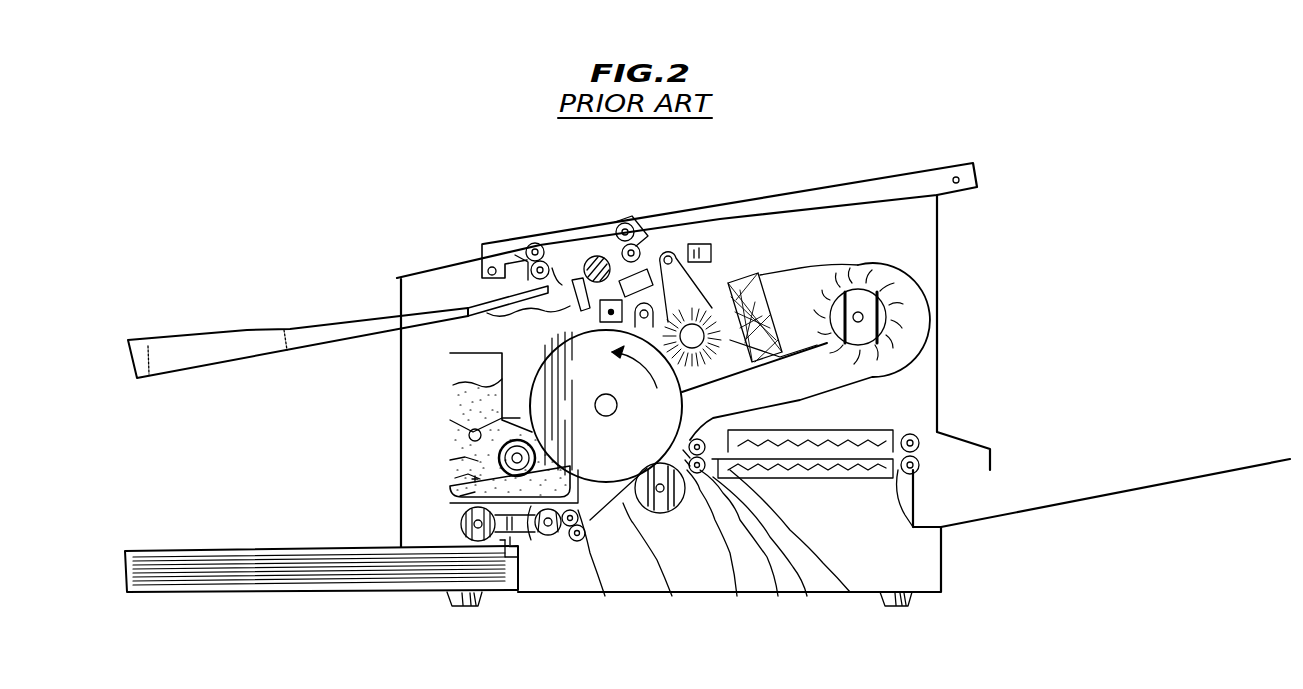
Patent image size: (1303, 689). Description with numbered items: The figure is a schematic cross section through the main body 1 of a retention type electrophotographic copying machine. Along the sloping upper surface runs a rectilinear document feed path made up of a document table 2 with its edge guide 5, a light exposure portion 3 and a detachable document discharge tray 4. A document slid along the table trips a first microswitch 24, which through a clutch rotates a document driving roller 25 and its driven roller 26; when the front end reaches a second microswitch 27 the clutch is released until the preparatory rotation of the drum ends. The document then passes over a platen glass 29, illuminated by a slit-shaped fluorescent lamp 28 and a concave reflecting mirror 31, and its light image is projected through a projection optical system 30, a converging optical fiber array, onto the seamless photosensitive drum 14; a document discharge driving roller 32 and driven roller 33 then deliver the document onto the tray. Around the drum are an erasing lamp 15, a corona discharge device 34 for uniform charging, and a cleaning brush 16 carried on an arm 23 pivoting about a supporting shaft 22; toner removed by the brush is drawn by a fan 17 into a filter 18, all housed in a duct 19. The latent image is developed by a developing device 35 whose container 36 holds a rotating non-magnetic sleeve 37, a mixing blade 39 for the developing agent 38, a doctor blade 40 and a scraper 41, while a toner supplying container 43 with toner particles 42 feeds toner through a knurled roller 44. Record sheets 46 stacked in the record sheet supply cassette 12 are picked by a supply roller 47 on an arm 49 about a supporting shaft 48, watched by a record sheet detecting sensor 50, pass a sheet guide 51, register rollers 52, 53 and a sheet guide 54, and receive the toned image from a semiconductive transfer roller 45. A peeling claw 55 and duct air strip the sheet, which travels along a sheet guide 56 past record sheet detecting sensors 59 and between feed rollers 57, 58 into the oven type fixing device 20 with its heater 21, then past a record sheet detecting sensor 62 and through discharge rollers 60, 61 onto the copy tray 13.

The main body 1 is at (945, 588).
The document table 2 is at (830, 205).
The light exposure portion 3 is at (584, 220).
The document discharge tray 4 is at (285, 333).
The edge guide 5 is at (800, 210).
The record sheet supply cassette 12 is at (208, 548).
The copy tray 13 is at (1130, 488).
The photosensitive drum 14 is at (605, 470).
The erasing lamp 15 is at (690, 278).
The cleaning brush 16 is at (820, 272).
The fan 17 is at (913, 293).
The filter 18 is at (860, 283).
The duct 19 is at (918, 307).
The fixing device 20 is at (807, 482).
The heater 21 is at (870, 470).
The supporting shaft 22 is at (702, 252).
The arm 23 is at (760, 283).
The first microswitch 24 is at (710, 254).
The document driving roller 25 is at (646, 270).
The driven roller 26 is at (636, 244).
The second microswitch 27 is at (627, 222).
The fluorescent lamp 28 is at (598, 256).
The platen glass 29 is at (560, 265).
The projection optical system 30 is at (487, 313).
The concave reflecting mirror 31 is at (543, 243).
The document discharge driving roller 32 is at (526, 266).
The driven roller 33 is at (532, 262).
The corona discharge device 34 is at (668, 262).
The developing device 35 is at (438, 410).
The container 36 is at (450, 460).
The non-magnetic sleeve 37 is at (458, 440).
The developing agent 38 is at (455, 478).
The mixing blade 39 is at (460, 496).
The doctor blade 40 is at (455, 518).
The scraper 41 is at (508, 430).
The toner particles 42 is at (460, 398).
The toner supplying container 43 is at (450, 358).
The knurled roller 44 is at (470, 356).
The transfer roller 45 is at (662, 517).
The record sheets 46 is at (294, 560).
The supply roller 47 is at (460, 540).
The supporting shaft 48 is at (548, 540).
The arm 49 is at (538, 548).
The record sheet detecting sensor 50 is at (498, 560).
The sheet guide 51 is at (570, 528).
The register roller 52 is at (612, 568).
The register roller 53 is at (580, 542).
The sheet guide 54 is at (664, 565).
The peeling claw 55 is at (750, 558).
The sheet guide 56 is at (730, 548).
The feed roller 57 is at (800, 558).
The feed roller 58 is at (777, 551).
The record sheet detecting sensors 59 is at (688, 445).
The discharge roller 60 is at (918, 468).
The discharge roller 61 is at (918, 443).
The record sheet detecting sensor 62 is at (915, 540).